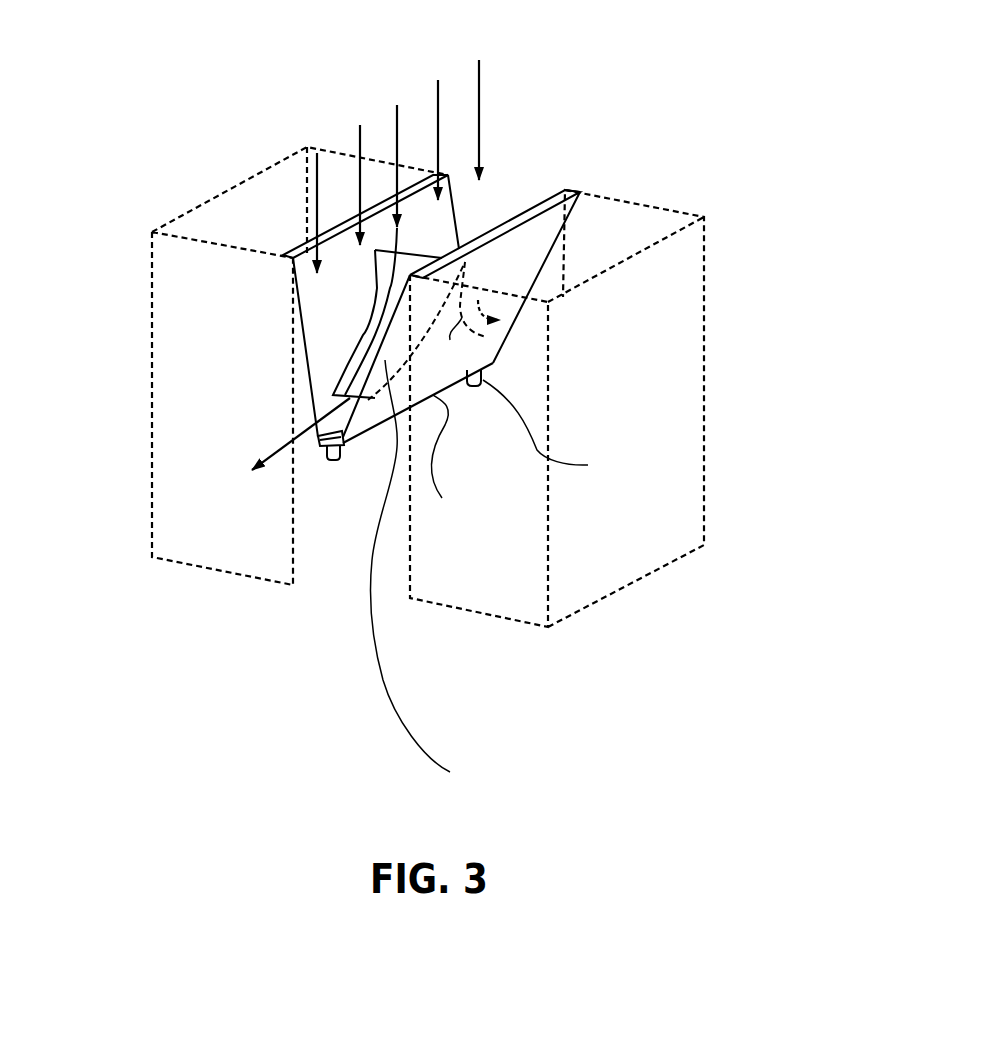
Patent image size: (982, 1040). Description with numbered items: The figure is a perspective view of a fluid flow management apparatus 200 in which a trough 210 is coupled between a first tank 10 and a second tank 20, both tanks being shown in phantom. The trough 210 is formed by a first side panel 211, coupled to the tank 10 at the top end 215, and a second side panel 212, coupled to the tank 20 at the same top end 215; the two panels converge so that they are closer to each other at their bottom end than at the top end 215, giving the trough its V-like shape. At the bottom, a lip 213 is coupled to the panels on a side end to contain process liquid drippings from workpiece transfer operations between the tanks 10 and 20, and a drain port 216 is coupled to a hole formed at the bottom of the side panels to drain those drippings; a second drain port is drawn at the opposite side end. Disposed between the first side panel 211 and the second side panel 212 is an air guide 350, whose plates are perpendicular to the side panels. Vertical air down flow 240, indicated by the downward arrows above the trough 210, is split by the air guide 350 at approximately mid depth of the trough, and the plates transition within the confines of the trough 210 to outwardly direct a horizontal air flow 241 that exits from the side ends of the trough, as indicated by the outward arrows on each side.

The fluid flow management apparatus 200 is at (157, 97).
The tank 10 is at (148, 543).
The tank 20 is at (483, 602).
The trough 210 is at (437, 401).
The first side panel 211 is at (317, 303).
The second side panel 212 is at (517, 268).
The lip 213 is at (343, 443).
The top end 215 is at (570, 183).
The drain port 216 is at (313, 463).
The vertical air down flow 240 is at (420, 142).
The air flow 241 is at (485, 308).
The air guide 350 is at (418, 248).